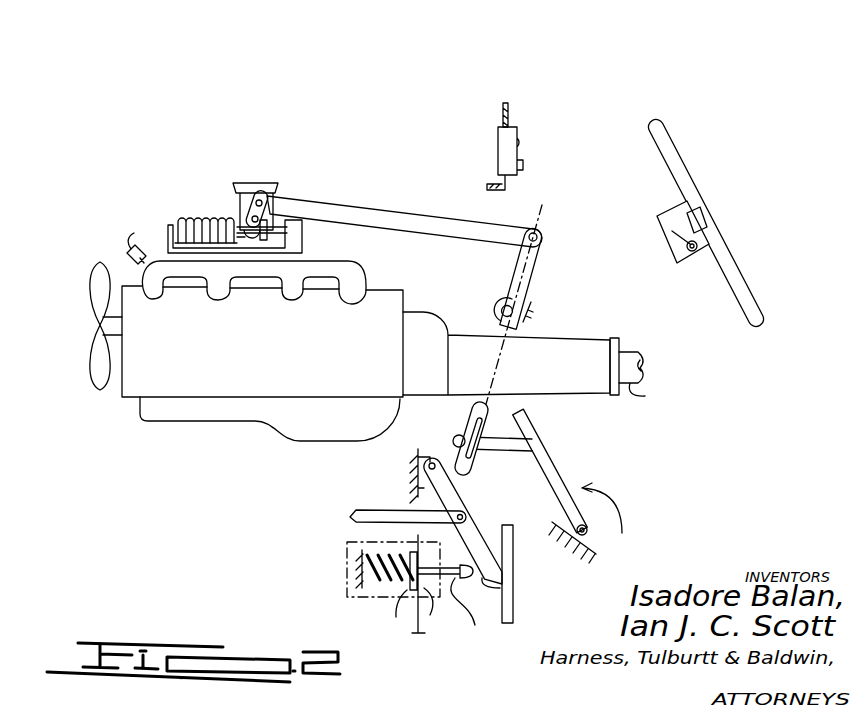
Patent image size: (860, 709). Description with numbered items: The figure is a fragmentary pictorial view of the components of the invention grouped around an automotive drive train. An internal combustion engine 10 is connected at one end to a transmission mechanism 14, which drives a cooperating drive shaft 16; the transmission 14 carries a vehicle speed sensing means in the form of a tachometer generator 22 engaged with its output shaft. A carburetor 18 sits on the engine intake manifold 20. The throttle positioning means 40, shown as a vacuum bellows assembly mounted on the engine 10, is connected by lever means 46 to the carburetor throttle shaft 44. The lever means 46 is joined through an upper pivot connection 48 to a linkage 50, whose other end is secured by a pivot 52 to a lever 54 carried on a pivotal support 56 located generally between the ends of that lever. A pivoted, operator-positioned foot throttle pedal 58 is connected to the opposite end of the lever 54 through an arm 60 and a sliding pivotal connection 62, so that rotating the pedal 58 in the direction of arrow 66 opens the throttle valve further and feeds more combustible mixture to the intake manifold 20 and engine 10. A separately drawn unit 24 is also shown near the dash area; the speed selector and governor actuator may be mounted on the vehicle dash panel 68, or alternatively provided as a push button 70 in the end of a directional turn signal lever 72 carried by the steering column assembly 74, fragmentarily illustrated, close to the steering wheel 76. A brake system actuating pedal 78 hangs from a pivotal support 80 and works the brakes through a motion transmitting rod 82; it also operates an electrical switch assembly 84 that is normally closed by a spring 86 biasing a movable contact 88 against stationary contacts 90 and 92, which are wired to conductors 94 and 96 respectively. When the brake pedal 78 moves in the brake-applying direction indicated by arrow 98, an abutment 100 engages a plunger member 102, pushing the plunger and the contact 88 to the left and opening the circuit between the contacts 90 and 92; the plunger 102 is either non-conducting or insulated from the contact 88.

The internal combustion engine 10 is at (156, 384).
The transmission mechanism 14 is at (568, 333).
The drive shaft 16 is at (640, 388).
The carburetor 18 is at (259, 173).
The engine intake manifold 20 is at (330, 266).
The tachometer generator 22 is at (127, 252).
The control unit 24 is at (490, 138).
The throttle positioning means 40 is at (174, 201).
The carburetor throttle shaft 44 is at (242, 214).
The lever means 46 is at (288, 202).
The upper pivot connection 48 is at (263, 208).
The linkage 50 is at (388, 212).
The pivot 52 is at (533, 224).
The lever 54 is at (541, 270).
The pivotal support 56 is at (507, 300).
The foot throttle pedal 58 is at (536, 424).
The arm 60 is at (504, 452).
The sliding pivotal connection 62 is at (452, 444).
The arrow 66 is at (617, 500).
The vehicle dash panel 68 is at (508, 116).
The push button 70 is at (692, 254).
The directional turn signal lever 72 is at (656, 238).
The steering column assembly 74 is at (660, 212).
The steering wheel 76 is at (683, 161).
The brake system actuating pedal 78 is at (513, 568).
The pivotal support 80 is at (416, 459).
The motion transmitting rod 82 is at (370, 510).
The electrical switch assembly 84 is at (337, 574).
The spring 86 is at (362, 588).
The movable contact 88 is at (404, 588).
The stationary contact 90 is at (422, 557).
The stationary contact 92 is at (434, 584).
The conductor 94 is at (407, 553).
The conductor 96 is at (417, 618).
The arrow 98 is at (540, 615).
The abutment 100 is at (502, 590).
The plunger member 102 is at (510, 645).